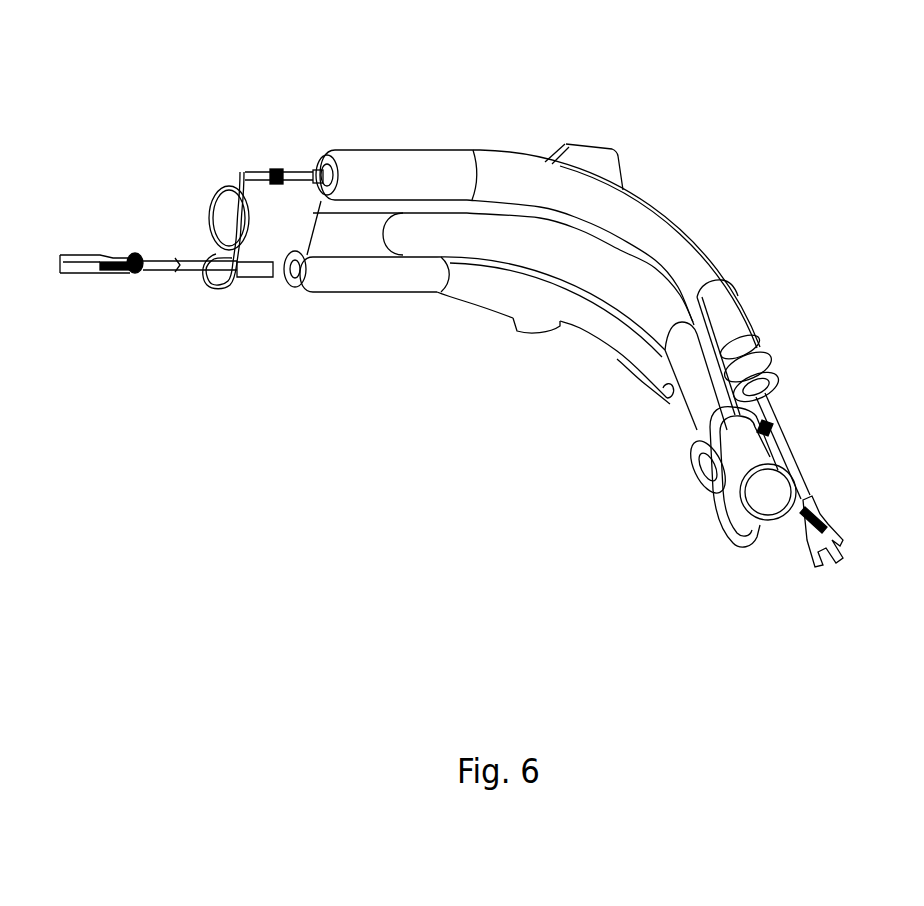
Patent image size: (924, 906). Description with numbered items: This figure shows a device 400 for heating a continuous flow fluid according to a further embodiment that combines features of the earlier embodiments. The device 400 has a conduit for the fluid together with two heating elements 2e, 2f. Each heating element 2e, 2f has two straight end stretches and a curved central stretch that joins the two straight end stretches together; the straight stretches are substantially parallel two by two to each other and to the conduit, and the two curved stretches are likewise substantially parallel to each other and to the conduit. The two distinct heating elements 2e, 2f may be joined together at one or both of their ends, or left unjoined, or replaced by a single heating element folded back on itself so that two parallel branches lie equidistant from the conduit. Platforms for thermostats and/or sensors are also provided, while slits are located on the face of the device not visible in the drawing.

The device for heating continuous flow fluids 400 is at (748, 140).
The heating element 2e is at (323, 157).
The heating element 2f is at (297, 265).